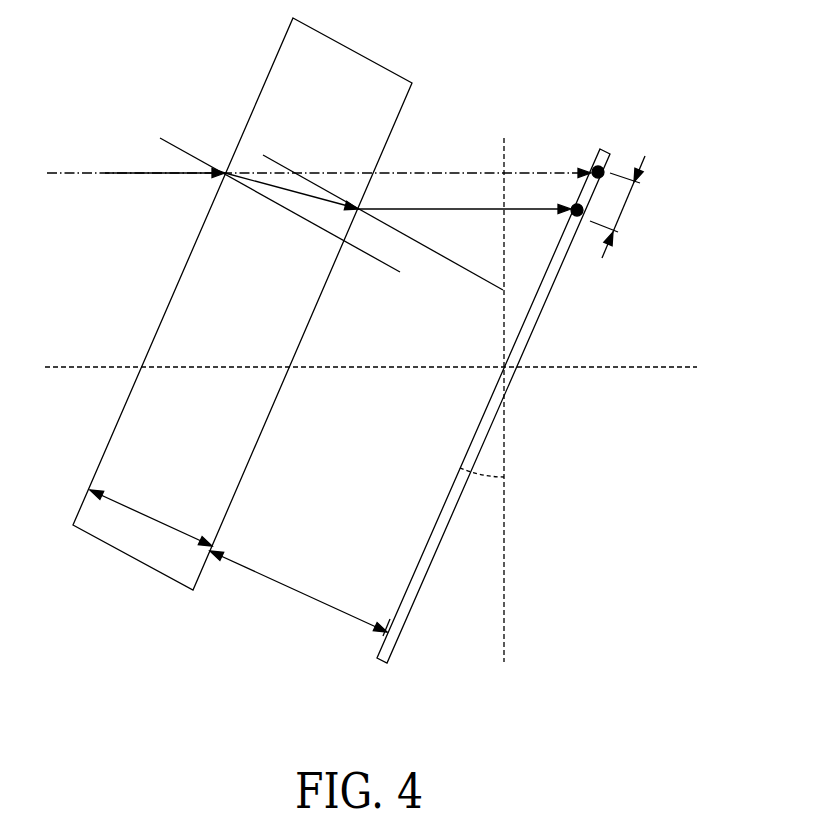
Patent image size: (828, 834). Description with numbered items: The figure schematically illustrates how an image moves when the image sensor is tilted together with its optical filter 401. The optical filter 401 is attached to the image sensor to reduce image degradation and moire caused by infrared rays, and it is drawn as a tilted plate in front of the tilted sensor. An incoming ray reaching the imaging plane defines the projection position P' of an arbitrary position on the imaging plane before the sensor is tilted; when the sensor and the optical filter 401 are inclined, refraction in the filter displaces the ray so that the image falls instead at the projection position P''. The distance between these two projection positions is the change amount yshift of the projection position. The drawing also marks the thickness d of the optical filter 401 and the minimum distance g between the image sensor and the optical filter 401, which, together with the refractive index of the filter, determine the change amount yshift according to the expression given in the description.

The optical filter 401 is at (380, 46).
The projection position P' is at (630, 162).
The projection position P'' is at (594, 250).
The change amount of the projection position yshift is at (631, 207).
The thickness of the optical filter d is at (151, 525).
The distance between the image sensor and the optical filter g is at (298, 591).